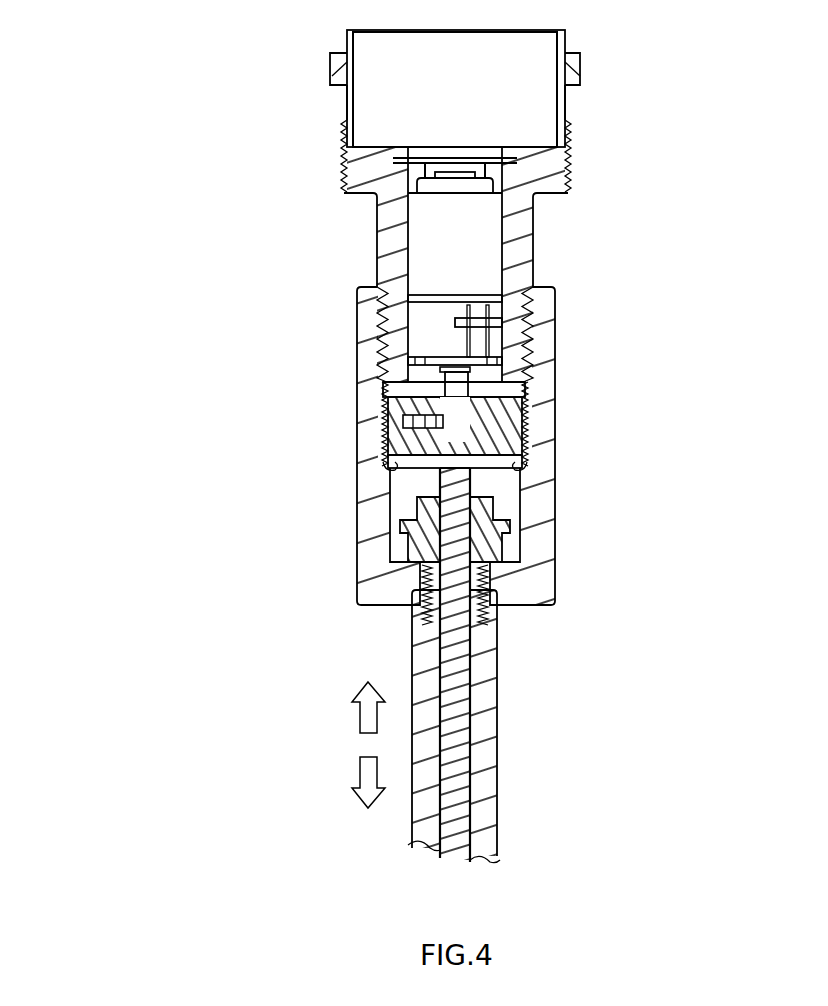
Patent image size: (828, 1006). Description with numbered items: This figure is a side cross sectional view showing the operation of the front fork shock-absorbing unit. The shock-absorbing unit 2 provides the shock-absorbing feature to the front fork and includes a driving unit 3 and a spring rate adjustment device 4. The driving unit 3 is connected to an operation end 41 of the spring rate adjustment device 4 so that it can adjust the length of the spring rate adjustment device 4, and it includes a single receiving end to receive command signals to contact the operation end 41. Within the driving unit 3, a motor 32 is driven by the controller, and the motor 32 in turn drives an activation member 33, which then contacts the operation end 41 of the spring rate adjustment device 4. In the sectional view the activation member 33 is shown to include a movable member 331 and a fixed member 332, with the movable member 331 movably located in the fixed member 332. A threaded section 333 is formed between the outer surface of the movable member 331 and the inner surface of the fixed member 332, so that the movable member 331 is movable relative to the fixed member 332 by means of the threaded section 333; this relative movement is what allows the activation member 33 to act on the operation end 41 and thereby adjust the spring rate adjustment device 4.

The shock-absorbing unit 2 is at (183, 200).
The driving unit 3 is at (353, 300).
The motor 32 is at (470, 238).
The activation member 33 is at (212, 493).
The movable member 331 is at (387, 402).
The fixed member 332 is at (368, 363).
The threaded section 333 is at (377, 477).
The operation end 41 is at (463, 460).
The spring rate adjustment device 4 is at (528, 752).